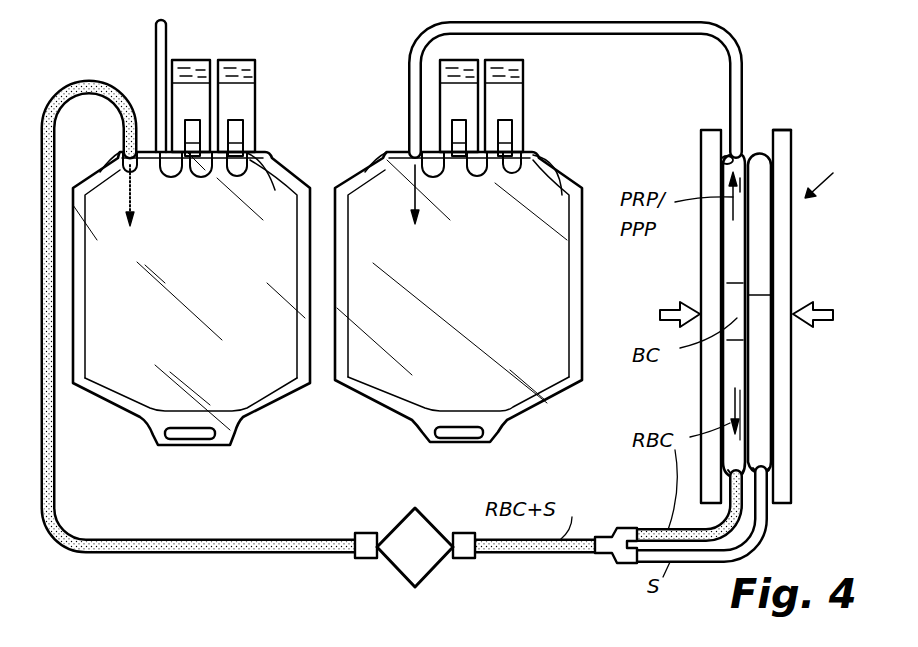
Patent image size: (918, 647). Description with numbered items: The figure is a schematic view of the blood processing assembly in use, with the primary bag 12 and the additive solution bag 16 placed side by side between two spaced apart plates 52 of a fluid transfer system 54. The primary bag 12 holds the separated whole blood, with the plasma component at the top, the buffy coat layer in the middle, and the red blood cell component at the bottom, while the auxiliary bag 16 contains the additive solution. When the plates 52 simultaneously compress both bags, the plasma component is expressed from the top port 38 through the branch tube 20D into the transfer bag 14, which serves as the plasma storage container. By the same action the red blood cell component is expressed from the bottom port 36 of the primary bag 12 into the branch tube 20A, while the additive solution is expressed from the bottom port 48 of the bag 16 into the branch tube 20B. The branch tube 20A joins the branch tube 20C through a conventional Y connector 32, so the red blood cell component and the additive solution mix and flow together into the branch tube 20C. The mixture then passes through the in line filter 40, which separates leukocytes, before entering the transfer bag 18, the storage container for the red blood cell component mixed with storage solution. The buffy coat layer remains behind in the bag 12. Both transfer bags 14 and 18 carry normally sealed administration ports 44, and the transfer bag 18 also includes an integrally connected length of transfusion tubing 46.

The primary bag 12 is at (740, 162).
The transfer bag 14 is at (537, 193).
The auxiliary bag 16 is at (780, 146).
The transfer bag 18 is at (280, 195).
The branch tube 20A is at (713, 553).
The branch tube 20B is at (767, 533).
The branch tube 20C is at (183, 543).
The branch tube 20D is at (680, 23).
The Y connector 32 is at (617, 556).
The bottom port 36 is at (727, 465).
The top port 38 is at (722, 160).
The in line filter 40 is at (410, 485).
The administration ports 44 is at (227, 67).
The transfusion tubing 46 is at (156, 36).
The bottom port 48 is at (760, 470).
The plates 52 is at (710, 262).
The fluid transfer system 54 is at (837, 176).